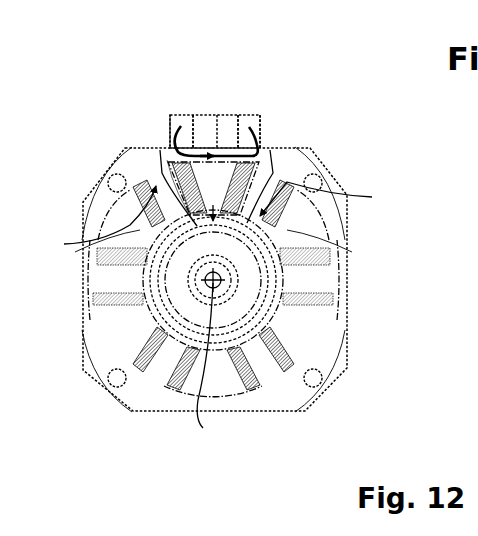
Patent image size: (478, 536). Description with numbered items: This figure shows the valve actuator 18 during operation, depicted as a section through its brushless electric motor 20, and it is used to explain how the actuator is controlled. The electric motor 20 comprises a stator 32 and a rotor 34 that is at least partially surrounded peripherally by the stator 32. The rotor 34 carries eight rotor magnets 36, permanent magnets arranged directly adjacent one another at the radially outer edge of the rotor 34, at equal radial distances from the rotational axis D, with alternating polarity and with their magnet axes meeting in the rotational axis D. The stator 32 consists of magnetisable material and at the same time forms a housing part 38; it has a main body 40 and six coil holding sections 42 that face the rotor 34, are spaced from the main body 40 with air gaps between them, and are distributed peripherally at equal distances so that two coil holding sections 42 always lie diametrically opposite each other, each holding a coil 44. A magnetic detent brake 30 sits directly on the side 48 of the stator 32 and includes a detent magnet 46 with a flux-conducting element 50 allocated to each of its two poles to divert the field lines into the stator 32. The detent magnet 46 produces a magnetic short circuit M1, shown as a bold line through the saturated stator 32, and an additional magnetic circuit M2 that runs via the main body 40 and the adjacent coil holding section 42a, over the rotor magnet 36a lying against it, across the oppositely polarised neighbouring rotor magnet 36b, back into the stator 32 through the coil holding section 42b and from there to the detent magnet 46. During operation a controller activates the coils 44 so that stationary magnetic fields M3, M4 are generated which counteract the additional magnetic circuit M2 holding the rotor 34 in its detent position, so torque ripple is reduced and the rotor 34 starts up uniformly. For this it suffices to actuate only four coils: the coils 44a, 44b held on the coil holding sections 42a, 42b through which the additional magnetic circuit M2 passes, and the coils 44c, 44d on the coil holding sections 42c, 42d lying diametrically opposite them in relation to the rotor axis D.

The valve actuator 18 is at (340, 84).
The electric motor 20 is at (92, 160).
The magnetic detent brake 30 is at (248, 103).
The stator 32 is at (284, 157).
The rotor 34 is at (300, 308).
The rotor magnets 36 is at (160, 324).
The rotor magnet 36a is at (172, 236).
The rotor magnet 36b is at (300, 270).
The housing part 38 is at (330, 176).
The main body 40 is at (97, 167).
The coil holding sections 42 is at (186, 288).
The coil holding section 42a is at (105, 212).
The coil holding section 42b is at (284, 236).
The third stator pole 42c is at (305, 375).
The fourth stator pole 42d is at (162, 365).
The coil 44 is at (120, 256).
The coil 44a is at (142, 183).
The coil 44b is at (290, 222).
The coil 44c is at (263, 370).
The coil 44d is at (184, 380).
The detent magnet 46 is at (203, 118).
The side of the stator 48 is at (139, 145).
The flux-conducting element 50 is at (184, 116).
The rotational axis D is at (210, 365).
The magnetic short circuit M1 is at (219, 152).
The additional magnetic circuit M2 is at (167, 160).
The stationary magnetic field M3 is at (95, 220).
The stationary magnetic field M4 is at (333, 199).